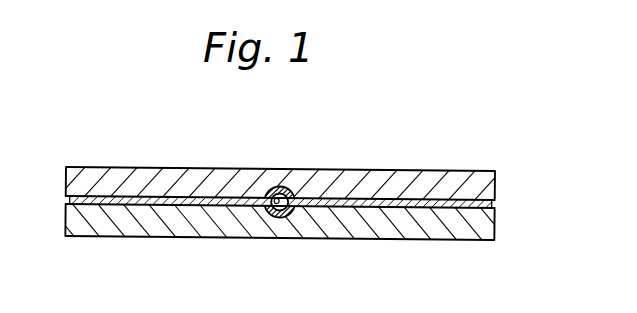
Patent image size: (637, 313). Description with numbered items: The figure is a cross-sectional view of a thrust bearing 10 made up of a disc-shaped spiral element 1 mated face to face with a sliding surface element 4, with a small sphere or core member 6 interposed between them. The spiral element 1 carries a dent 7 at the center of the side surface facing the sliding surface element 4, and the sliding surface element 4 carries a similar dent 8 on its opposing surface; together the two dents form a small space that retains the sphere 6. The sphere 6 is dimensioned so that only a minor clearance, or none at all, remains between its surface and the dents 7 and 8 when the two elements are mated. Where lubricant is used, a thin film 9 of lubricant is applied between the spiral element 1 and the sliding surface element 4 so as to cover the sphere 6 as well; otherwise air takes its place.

The spiral element 1 is at (414, 170).
The sliding surface element 4 is at (436, 229).
The thin film of lubricant 9 is at (188, 202).
The dent 7 is at (289, 191).
The dent 8 is at (298, 216).
The sphere 6 is at (274, 214).
The thrust bearing 10 is at (478, 147).